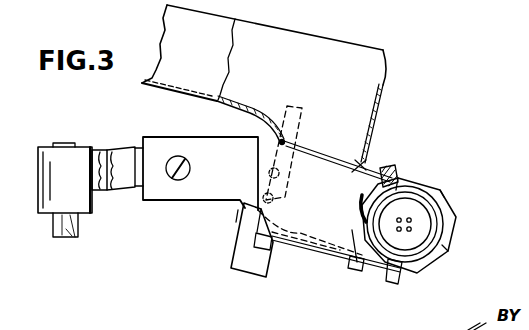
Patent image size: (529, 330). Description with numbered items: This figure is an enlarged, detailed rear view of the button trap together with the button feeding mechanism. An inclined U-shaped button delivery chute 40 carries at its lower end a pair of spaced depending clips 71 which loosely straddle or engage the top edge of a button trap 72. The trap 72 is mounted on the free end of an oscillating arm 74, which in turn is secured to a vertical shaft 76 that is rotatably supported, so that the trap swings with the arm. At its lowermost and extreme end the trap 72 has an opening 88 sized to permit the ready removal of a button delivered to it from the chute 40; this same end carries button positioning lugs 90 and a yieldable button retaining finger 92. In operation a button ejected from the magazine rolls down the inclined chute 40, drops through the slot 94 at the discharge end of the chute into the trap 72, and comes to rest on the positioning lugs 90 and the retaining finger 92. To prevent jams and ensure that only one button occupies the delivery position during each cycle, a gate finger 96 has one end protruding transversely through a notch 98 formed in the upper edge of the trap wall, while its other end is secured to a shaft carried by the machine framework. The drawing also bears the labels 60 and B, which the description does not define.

The button delivery chute 40 is at (200, 23).
The panel portion 60 is at (315, 0).
The depending clips 71 is at (302, 114).
The button trap 72 is at (365, 163).
The oscillating arm 74 is at (123, 180).
The vertical shaft 76 is at (57, 222).
The opening 88 is at (367, 207).
The button positioning lugs 90 is at (440, 194).
The button retaining finger 92 is at (400, 280).
The slot 94 is at (286, 142).
The gate finger 96 is at (393, 163).
The notch 98 is at (400, 174).
The bearing assembly B is at (425, 228).